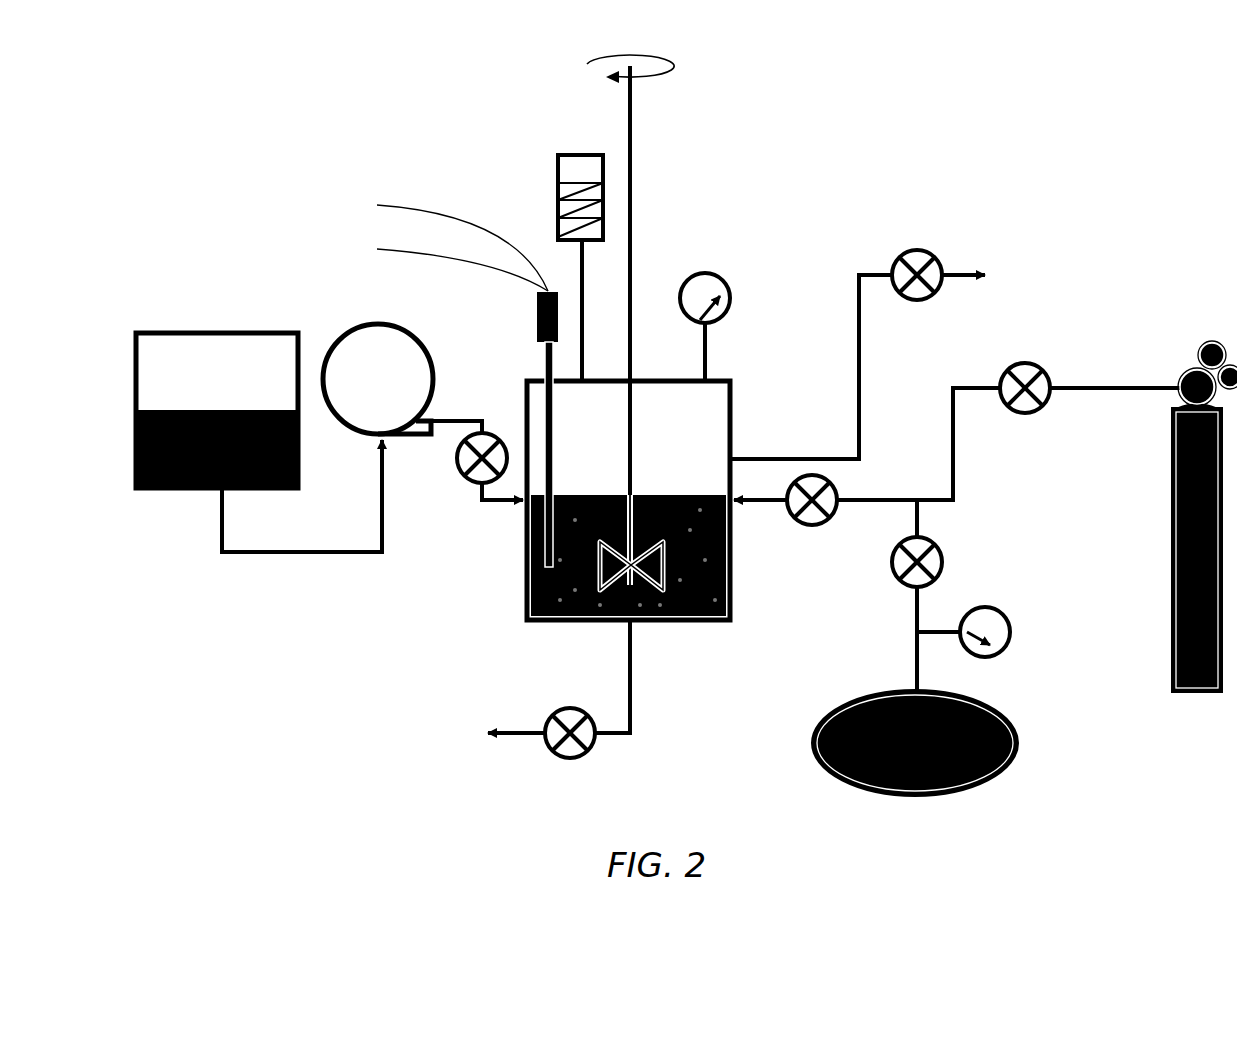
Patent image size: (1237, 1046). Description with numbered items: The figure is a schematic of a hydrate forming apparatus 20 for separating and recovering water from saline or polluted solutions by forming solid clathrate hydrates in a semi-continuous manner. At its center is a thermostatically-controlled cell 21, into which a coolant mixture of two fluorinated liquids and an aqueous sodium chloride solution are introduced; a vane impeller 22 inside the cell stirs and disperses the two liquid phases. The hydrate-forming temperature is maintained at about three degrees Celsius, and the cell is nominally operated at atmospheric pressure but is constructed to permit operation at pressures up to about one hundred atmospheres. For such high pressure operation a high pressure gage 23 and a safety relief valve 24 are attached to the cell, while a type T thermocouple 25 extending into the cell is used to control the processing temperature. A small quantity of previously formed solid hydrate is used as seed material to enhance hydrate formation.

The hydrate forming apparatus 20 is at (451, 150).
The thermostatically-controlled cell 21 is at (633, 567).
The vane impeller 22 is at (525, 619).
The high pressure gage 23 is at (710, 275).
The safety relief valve 24 is at (557, 157).
The type T thermocouple 25 is at (537, 305).